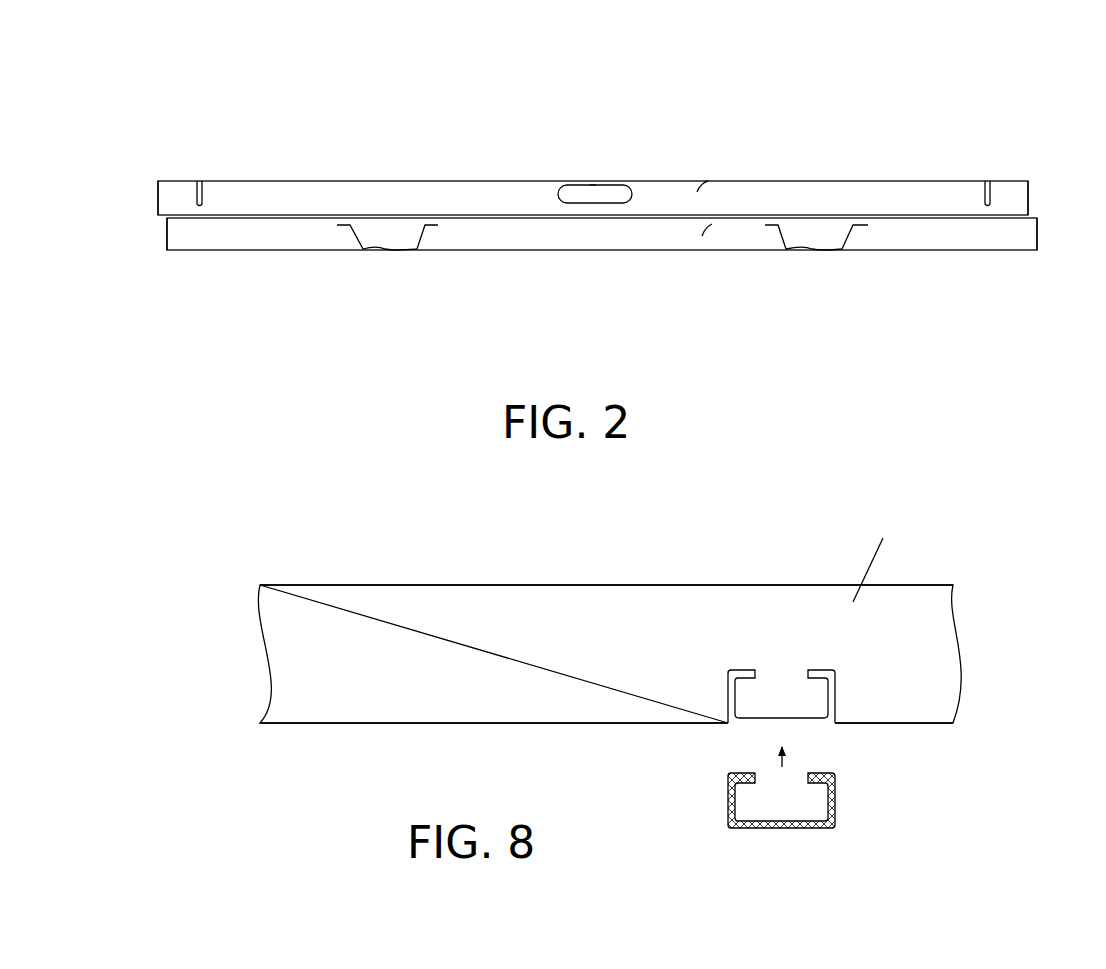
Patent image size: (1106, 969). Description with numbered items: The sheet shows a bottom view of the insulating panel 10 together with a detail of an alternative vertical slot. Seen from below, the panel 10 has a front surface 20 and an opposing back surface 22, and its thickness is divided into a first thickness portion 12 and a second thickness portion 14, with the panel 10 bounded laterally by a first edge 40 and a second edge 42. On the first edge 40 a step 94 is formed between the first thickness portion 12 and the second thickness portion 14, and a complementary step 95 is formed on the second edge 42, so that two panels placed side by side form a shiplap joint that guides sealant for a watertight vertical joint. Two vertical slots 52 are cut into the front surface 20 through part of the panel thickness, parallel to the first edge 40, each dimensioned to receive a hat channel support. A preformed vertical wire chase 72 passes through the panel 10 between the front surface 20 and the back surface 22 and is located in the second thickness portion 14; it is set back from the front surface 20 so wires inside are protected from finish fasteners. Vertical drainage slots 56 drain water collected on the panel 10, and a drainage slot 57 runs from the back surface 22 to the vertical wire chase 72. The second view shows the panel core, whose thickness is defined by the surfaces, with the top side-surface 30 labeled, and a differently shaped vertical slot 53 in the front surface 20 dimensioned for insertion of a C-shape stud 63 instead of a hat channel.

In FIG. 2, the insulating panel 10 is at (887, 108).
In FIG. 2, the first thickness portion 12 is at (702, 236).
In FIG. 2, the second thickness portion 14 is at (697, 192).
In FIG. 2, the front surface 20 is at (293, 255).
In FIG. 8, the front surface 20 is at (355, 723).
In FIG. 2, the back surface 22 is at (290, 181).
In FIG. 8, the back surface 22 is at (387, 585).
In FIG. 8, the top side-surface 30 is at (481, 644).
In FIG. 2, the first edge 40 is at (1054, 213).
In FIG. 2, the second edge 42 is at (135, 217).
In FIG. 2, the vertical slots 52 is at (353, 237).
In FIG. 8, the vertical slots 53 is at (728, 717).
In FIG. 2, the vertical drainage slots 56 is at (199, 181).
In FIG. 2, the drainage slot 57 is at (593, 185).
In FIG. 8, the C-shape stud 63 is at (836, 803).
In FIG. 2, the vertical wire chase 72 is at (577, 190).
In FIG. 2, the step 94 is at (1033, 208).
In FIG. 2, the complementary step 95 is at (160, 223).